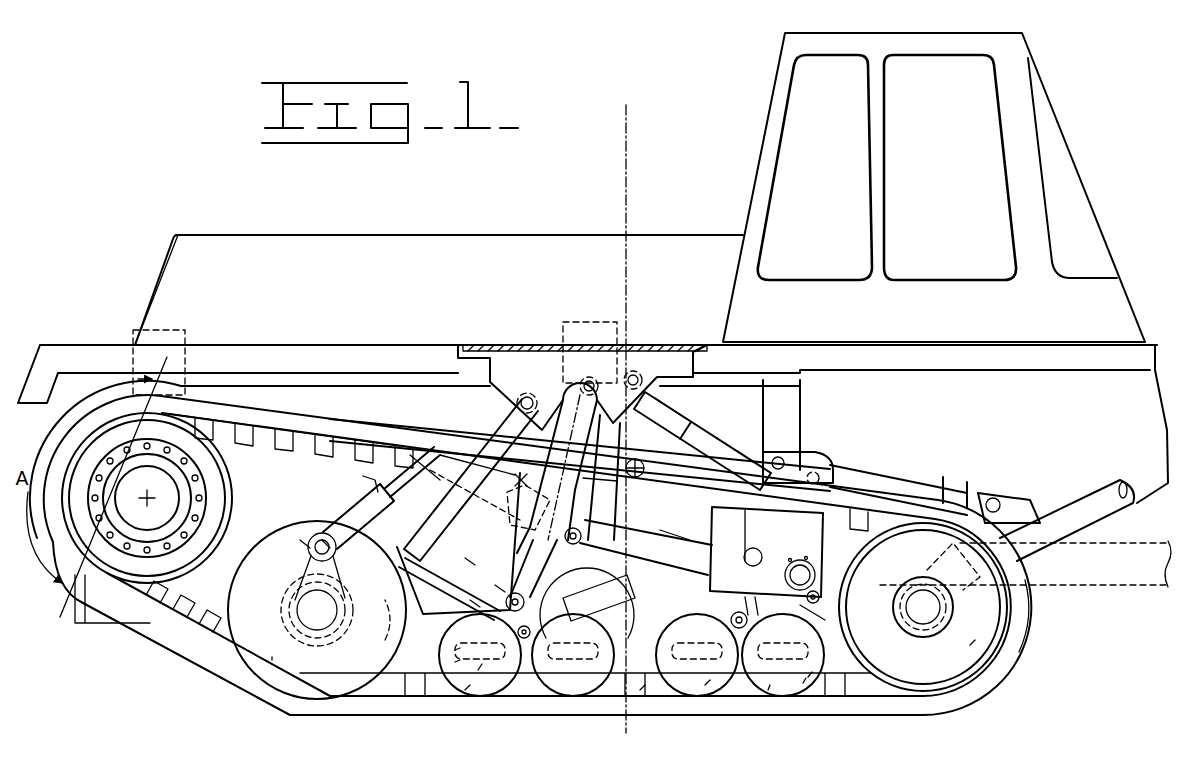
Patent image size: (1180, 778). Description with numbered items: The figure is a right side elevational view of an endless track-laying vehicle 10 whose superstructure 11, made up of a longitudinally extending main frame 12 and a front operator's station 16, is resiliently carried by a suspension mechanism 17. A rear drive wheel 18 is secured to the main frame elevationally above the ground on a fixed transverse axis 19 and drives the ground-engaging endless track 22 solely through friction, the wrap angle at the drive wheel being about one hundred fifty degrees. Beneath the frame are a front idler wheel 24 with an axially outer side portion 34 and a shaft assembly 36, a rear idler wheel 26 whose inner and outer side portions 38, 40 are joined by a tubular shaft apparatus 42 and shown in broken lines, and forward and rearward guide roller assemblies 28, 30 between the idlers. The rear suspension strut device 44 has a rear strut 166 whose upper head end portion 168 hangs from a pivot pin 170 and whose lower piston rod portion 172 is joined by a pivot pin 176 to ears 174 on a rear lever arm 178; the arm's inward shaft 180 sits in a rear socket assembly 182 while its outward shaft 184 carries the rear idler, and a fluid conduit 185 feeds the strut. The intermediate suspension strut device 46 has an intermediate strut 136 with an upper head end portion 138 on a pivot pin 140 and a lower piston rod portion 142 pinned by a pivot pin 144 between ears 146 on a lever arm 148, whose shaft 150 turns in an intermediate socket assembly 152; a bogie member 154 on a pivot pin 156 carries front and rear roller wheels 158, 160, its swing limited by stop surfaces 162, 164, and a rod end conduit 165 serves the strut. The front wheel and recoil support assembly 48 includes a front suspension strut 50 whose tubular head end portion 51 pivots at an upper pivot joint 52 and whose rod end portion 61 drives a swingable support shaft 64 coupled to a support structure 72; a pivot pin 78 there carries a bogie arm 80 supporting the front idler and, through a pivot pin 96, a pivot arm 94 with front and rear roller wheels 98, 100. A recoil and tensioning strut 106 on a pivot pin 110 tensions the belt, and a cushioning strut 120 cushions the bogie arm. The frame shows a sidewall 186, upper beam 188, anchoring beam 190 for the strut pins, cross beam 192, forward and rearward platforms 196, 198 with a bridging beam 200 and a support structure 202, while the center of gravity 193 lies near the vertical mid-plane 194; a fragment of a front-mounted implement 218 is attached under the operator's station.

The vehicle 10 is at (175, 197).
The superstructure 11 is at (162, 280).
The main frame 12 is at (470, 362).
The operator's station 16 is at (768, 128).
The suspension mechanism 17 is at (155, 633).
The rear drive wheel 18 is at (215, 472).
The transverse axis 19 is at (150, 498).
The endless track 22 is at (1037, 608).
The front idler wheel 24 is at (970, 645).
The rear idler wheel 26 is at (265, 680).
The forward guide roller assembly 28 is at (803, 683).
The rearward guide roller assembly 30 is at (555, 685).
The axially outer side portion 34 is at (893, 673).
The shaft assembly 36 is at (953, 605).
The inner side portion 38 is at (243, 586).
The outer side portion 40 is at (310, 690).
The tubular shaft apparatus 42 is at (285, 617).
The rear suspension strut device 44 is at (320, 535).
The intermediate suspension strut device 46 is at (520, 562).
The front wheel and recoil support assembly 48 is at (740, 455).
The front suspension strut 50 is at (700, 430).
The tubular head end portion 51 is at (678, 408).
The upper pivot joint 52 is at (640, 345).
The rod end portion 61 is at (830, 512).
The swingable support shaft 64 is at (820, 572).
The support structure 72 is at (722, 595).
The pivot pin 78 is at (830, 600).
The bogie arm 80 is at (825, 620).
The pivot arm 94 is at (768, 690).
The pivot pin 96 is at (735, 615).
The front roller wheels 98 is at (808, 677).
The rear roller wheels 100 is at (705, 685).
The recoil and tensioning strut 106 is at (677, 545).
The pivot pin 110 is at (580, 555).
The cushioning strut 120 is at (745, 520).
The intermediate strut 136 is at (588, 429).
The upper head end portion 138 is at (557, 385).
The pivot pin 140 is at (597, 378).
The lower piston rod portion 142 is at (495, 585).
The pivot pin 144 is at (522, 596).
The ears 146 is at (470, 600).
The lever arm 148 is at (582, 540).
The shaft 150 is at (625, 590).
The intermediate socket assembly 152 is at (630, 560).
The bogie member 154 is at (526, 645).
The pivot pin 156 is at (478, 670).
The front roller wheels 158 is at (640, 690).
The rear roller wheels 160 is at (465, 690).
The stop surface 162 is at (455, 662).
The stop surface 164 is at (585, 618).
The rod end conduit 165 is at (516, 486).
The rear strut 166 is at (415, 458).
The upper head end portion 168 is at (490, 428).
The pivot pin 170 is at (515, 400).
The lower piston rod portion 172 is at (360, 528).
The ears 174 is at (300, 540).
The pivot pin 176 is at (322, 540).
The rear lever arm 178 is at (385, 640).
The shaft 180 is at (455, 650).
The rear socket assembly 182 is at (465, 558).
The shaft 184 is at (272, 657).
The fluid conduit 185 is at (363, 478).
The sidewall 186 is at (294, 413).
The upper beam 188 is at (332, 378).
The anchoring beam 190 is at (708, 362).
The cross beam 192 is at (597, 322).
The center of gravity 193 is at (640, 462).
The vertical mid-plane 194 is at (618, 190).
The forward platform 196 is at (581, 505).
The rearward platform 198 is at (403, 555).
The bridging beam 200 is at (458, 512).
The support structure 202 is at (510, 525).
The front-mounted implement 218 is at (1045, 553).